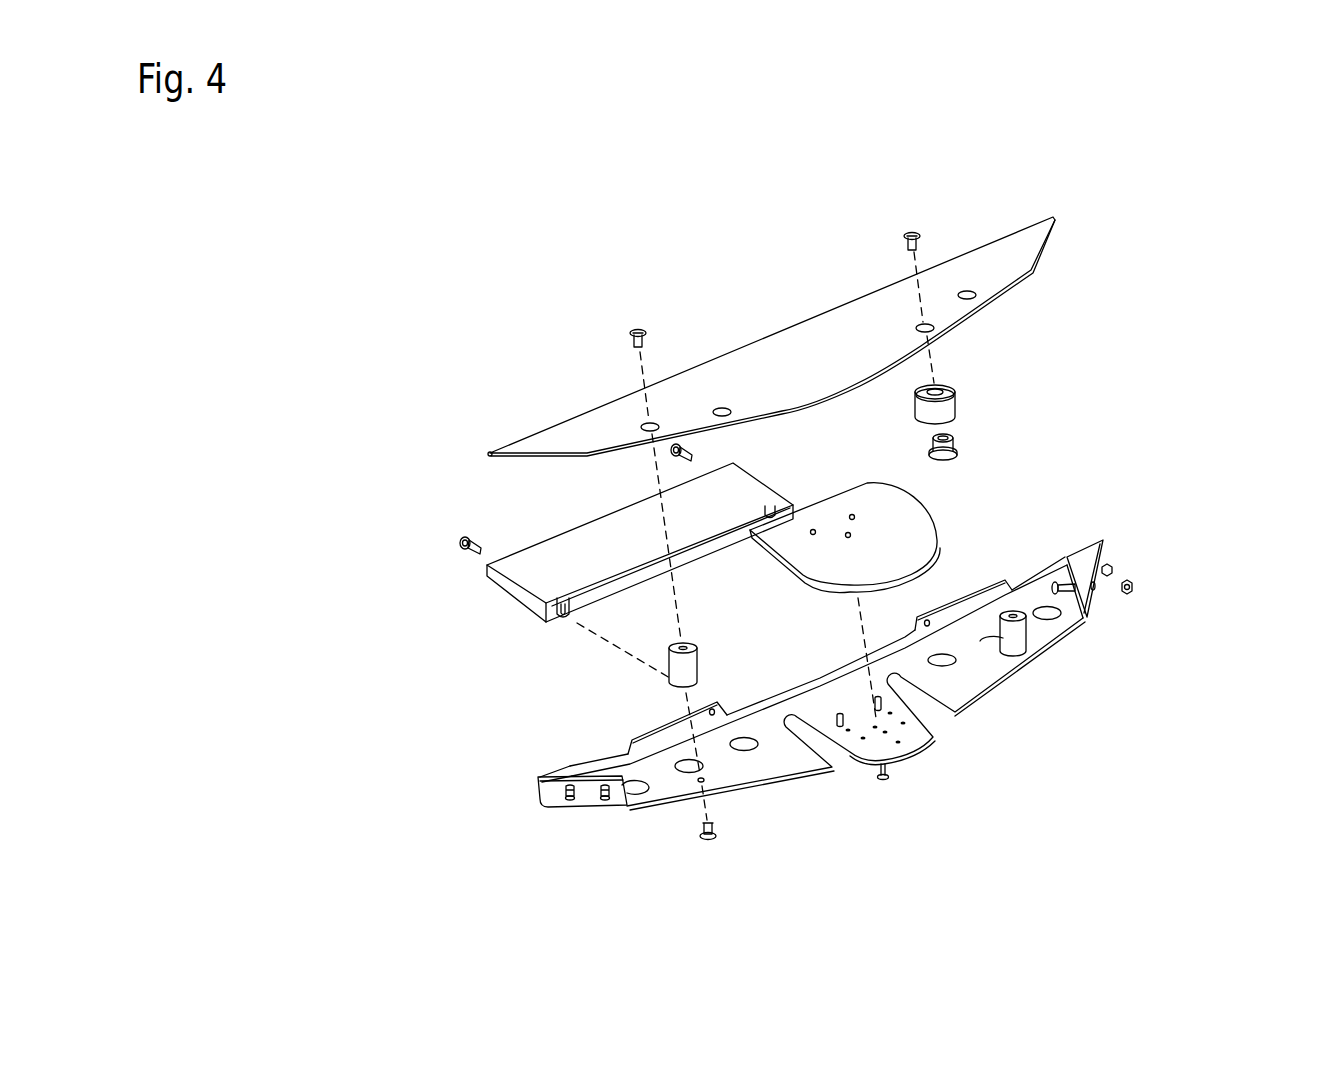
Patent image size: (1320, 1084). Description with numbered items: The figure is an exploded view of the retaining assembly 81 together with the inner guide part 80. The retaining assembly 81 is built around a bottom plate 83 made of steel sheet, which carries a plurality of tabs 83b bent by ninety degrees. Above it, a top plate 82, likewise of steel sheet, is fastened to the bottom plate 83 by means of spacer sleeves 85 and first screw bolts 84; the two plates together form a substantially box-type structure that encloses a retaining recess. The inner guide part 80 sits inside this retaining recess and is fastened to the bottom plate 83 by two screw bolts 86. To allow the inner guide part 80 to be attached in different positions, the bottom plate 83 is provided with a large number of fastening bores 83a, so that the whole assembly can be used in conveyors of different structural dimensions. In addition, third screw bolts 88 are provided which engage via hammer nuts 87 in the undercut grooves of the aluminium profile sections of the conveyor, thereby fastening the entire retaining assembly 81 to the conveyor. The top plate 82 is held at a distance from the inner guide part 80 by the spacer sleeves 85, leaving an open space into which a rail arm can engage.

The inner guide part 80 is at (888, 528).
The retaining assembly 81 is at (1120, 753).
The top plate 82 is at (795, 360).
The bottom plate 83 is at (753, 762).
The fastening bores 83a is at (898, 742).
The tabs 83b is at (650, 737).
The first screw bolts 84 is at (638, 330).
The spacer sleeves 85 is at (687, 663).
The screw bolts 86 is at (881, 778).
The hammer nuts 87 is at (1128, 583).
The third screw bolts 88 is at (1063, 587).